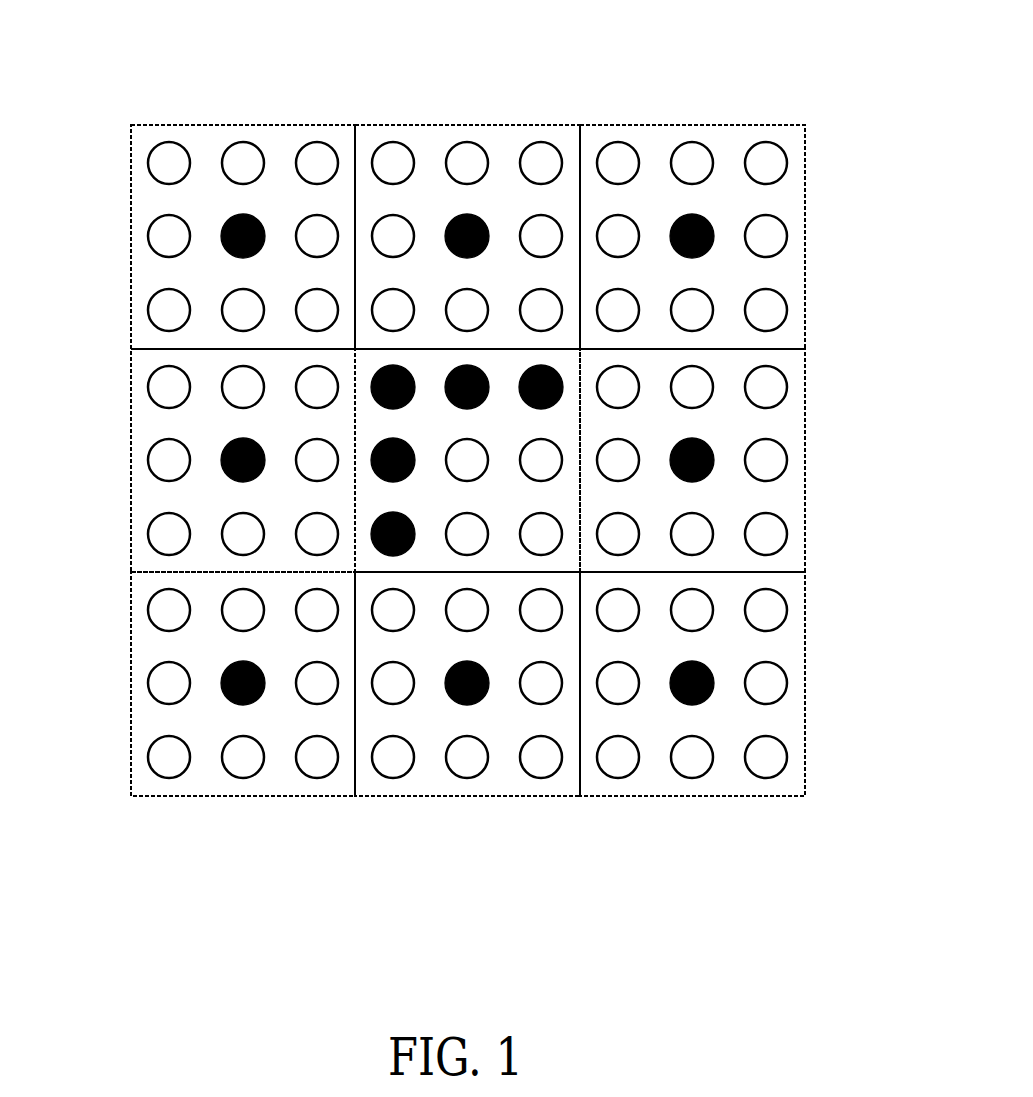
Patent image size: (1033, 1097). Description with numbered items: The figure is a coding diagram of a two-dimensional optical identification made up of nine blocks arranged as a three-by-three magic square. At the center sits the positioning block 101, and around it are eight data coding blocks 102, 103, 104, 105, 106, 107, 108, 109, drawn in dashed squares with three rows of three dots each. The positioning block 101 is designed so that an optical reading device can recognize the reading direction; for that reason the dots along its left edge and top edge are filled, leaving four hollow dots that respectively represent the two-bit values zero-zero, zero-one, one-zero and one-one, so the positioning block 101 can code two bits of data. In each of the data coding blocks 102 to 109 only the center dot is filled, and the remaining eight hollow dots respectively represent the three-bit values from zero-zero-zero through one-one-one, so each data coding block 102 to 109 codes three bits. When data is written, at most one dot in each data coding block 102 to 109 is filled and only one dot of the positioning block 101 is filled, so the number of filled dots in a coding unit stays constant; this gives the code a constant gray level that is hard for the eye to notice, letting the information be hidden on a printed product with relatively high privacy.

The positioning block 101 is at (429, 365).
The data coding block 102 is at (212, 147).
The data coding block 103 is at (512, 145).
The data coding block 104 is at (775, 133).
The data coding block 105 is at (777, 428).
The data coding block 106 is at (715, 783).
The data coding block 107 is at (440, 783).
The data coding block 108 is at (202, 783).
The data coding block 109 is at (177, 418).